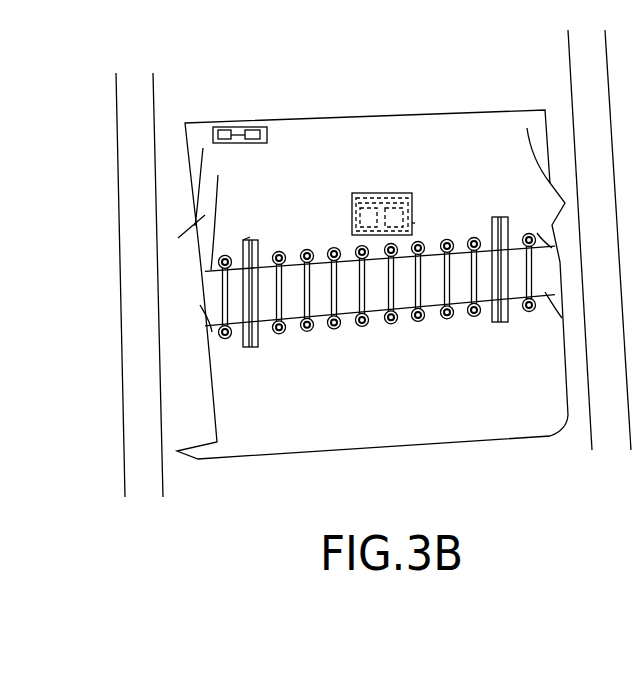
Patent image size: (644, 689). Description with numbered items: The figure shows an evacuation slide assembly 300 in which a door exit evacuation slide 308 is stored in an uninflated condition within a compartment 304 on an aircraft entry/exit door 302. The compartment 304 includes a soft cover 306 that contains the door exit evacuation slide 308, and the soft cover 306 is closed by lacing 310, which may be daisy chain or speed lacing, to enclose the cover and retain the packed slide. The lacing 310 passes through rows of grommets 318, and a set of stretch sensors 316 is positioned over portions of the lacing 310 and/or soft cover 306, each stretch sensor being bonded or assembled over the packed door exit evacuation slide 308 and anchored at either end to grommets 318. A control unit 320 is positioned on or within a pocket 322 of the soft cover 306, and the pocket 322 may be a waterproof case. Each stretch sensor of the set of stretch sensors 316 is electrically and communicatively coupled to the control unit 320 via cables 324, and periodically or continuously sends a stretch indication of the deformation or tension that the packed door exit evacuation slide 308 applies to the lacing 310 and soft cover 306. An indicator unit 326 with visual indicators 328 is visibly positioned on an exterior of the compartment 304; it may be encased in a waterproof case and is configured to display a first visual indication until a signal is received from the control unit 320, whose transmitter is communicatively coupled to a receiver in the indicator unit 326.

The evacuation slide assembly 300 is at (160, 292).
The aircraft entry/exit door 302 is at (168, 89).
The compartment 304 is at (188, 153).
The soft cover 306 is at (173, 280).
The door exit evacuation slide 308 is at (203, 305).
The lacing 310 is at (417, 310).
The set of stretch sensors 316 is at (258, 347).
The grommets 318 is at (475, 312).
The control unit 320 is at (352, 200).
The pocket 322 is at (374, 199).
The cables 324 is at (250, 237).
The indicator unit 326 is at (277, 114).
The visual indicators 328 is at (240, 134).